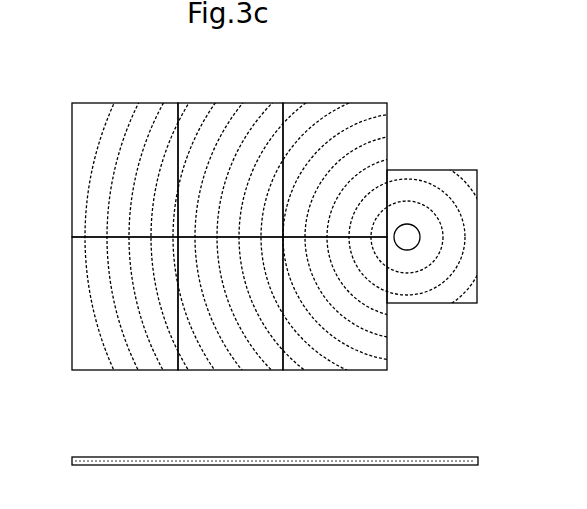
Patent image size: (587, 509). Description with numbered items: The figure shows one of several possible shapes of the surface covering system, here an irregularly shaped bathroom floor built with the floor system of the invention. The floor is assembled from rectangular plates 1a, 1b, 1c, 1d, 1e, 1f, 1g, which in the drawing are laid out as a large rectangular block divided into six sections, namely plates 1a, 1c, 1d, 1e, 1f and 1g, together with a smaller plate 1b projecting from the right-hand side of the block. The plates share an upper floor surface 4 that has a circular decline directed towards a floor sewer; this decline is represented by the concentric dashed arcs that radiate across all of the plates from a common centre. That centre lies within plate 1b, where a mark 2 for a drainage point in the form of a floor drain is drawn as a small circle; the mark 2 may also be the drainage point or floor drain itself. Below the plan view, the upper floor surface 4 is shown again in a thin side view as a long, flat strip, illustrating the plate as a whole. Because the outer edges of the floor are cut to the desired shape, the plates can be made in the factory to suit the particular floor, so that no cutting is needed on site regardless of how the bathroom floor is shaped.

The rectangular plate 1a is at (342, 128).
The rectangular plate 1b is at (438, 207).
The rectangular plate 1c is at (340, 340).
The rectangular plate 1d is at (250, 340).
The region of plate 1e is at (128, 340).
The region of plate 1f is at (128, 128).
The region of plate 1g is at (238, 128).
The mark 2 is at (413, 243).
The upper floor surface 4 is at (455, 457).